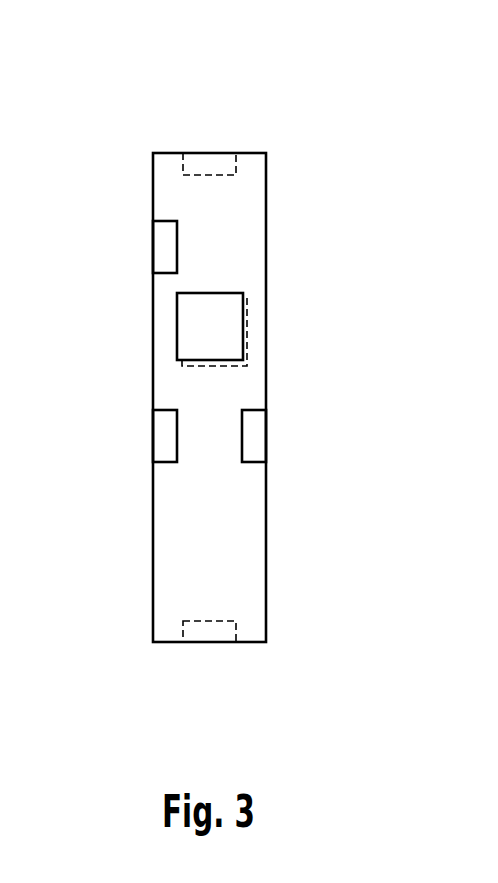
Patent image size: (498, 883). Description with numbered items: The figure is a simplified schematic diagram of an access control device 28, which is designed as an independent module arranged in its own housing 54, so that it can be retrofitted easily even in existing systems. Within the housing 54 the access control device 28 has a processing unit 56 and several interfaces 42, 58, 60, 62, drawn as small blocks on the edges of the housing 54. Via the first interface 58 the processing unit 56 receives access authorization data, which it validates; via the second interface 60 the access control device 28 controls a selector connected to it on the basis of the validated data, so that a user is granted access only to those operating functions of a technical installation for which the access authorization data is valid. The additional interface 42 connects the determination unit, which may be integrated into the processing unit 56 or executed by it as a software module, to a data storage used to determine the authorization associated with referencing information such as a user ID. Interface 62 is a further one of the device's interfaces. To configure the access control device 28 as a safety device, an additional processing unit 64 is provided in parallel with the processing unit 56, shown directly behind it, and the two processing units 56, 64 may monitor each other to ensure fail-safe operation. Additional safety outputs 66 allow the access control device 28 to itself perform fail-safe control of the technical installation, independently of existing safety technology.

The access control device 28 is at (176, 120).
The additional interface 42 is at (215, 163).
The housing 54 is at (266, 541).
The processing unit 56 is at (244, 307).
The first interface 58 is at (163, 433).
The second interface 60 is at (165, 240).
The interface 62 is at (255, 435).
The additional processing unit 64 is at (246, 347).
The safety outputs 66 is at (212, 630).